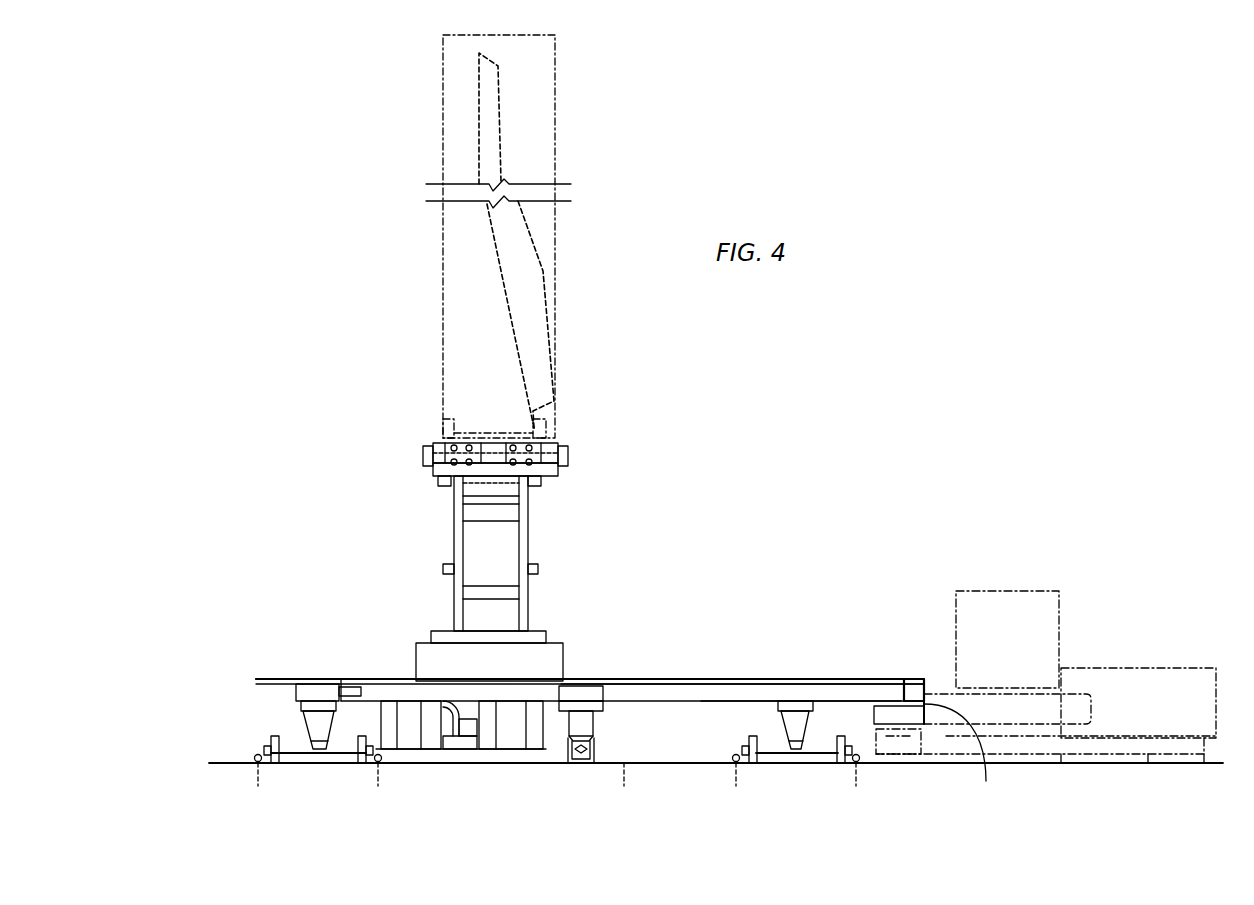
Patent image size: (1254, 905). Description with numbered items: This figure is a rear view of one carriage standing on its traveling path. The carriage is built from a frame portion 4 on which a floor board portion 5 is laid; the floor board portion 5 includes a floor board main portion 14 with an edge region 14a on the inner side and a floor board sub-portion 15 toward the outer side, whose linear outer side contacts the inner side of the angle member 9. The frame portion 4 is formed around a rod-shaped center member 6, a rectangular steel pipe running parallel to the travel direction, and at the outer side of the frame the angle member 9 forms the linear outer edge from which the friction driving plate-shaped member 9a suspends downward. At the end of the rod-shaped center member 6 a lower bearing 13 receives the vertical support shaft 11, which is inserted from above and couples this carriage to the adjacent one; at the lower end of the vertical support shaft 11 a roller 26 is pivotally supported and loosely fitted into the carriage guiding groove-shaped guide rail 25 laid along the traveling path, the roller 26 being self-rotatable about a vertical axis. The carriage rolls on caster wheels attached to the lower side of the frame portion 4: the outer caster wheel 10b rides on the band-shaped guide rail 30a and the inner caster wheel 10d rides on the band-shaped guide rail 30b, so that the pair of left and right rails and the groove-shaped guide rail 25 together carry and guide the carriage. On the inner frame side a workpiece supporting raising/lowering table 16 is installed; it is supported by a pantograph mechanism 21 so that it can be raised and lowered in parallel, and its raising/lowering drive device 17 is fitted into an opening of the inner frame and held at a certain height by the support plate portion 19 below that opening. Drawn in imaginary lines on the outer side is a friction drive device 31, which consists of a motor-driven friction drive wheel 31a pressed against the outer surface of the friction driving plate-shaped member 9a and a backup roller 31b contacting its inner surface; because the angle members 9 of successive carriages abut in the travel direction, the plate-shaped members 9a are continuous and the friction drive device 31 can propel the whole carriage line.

The frame portion 4 is at (702, 680).
The floor board portion 5 is at (658, 680).
The rod-shaped center member 6 is at (585, 692).
The angle member 9 is at (915, 680).
The friction driving plate-shaped member 9a is at (965, 754).
The caster wheel 10b is at (797, 745).
The caster wheel 10d is at (316, 745).
The vertical support shaft 11 is at (588, 718).
The lower bearing 13 is at (592, 705).
The floor board main portion 14 is at (287, 678).
The beam end plate 14a is at (258, 679).
The floor board sub-portion 15 is at (780, 680).
The raising/lowering table 16 is at (557, 470).
The raising/lowering drive device 17 is at (460, 742).
The support plate portion 19 is at (413, 750).
The pantograph mechanism 21 is at (453, 548).
The carriage guiding groove-shaped guide rail 25 is at (600, 745).
The roller 26 is at (580, 748).
The band-shaped guide rail 30a is at (775, 756).
The band-shaped guide rail 30b is at (337, 758).
The friction drive device 31 is at (1015, 590).
The friction drive wheel 31a is at (998, 710).
The backup roller 31b is at (905, 748).